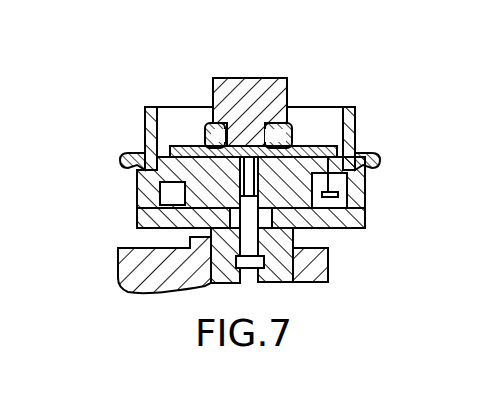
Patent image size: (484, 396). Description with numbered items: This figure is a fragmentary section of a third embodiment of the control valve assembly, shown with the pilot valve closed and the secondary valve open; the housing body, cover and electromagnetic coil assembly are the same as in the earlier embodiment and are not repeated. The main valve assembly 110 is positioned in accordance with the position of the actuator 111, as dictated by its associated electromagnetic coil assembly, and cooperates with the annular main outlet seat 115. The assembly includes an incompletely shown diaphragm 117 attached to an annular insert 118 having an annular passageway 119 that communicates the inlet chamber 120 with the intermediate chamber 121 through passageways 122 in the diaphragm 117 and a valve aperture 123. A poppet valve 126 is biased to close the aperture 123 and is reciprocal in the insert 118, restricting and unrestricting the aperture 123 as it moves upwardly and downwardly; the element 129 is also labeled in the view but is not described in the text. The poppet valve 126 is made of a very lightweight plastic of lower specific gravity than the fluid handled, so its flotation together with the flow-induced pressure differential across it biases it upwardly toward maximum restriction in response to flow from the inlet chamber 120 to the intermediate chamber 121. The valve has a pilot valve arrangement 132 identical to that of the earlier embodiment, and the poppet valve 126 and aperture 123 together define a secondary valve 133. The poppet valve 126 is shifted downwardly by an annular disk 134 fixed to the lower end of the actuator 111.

The main valve assembly 110 is at (112, 205).
The actuator 111 is at (230, 78).
The annular main outlet seat 115 is at (303, 246).
The diaphragm 117 is at (365, 208).
The annular insert 118 is at (355, 127).
The annular passageway 119 is at (172, 195).
The inlet chamber 120 is at (338, 262).
The intermediate chamber 121 is at (185, 113).
The passageways 122 is at (143, 210).
The valve aperture 123 is at (332, 128).
The poppet valve 126 is at (365, 165).
The pin 129 is at (338, 194).
The pilot valve arrangement 132 is at (207, 163).
The secondary valve 133 is at (345, 107).
The annular disk 134 is at (305, 150).